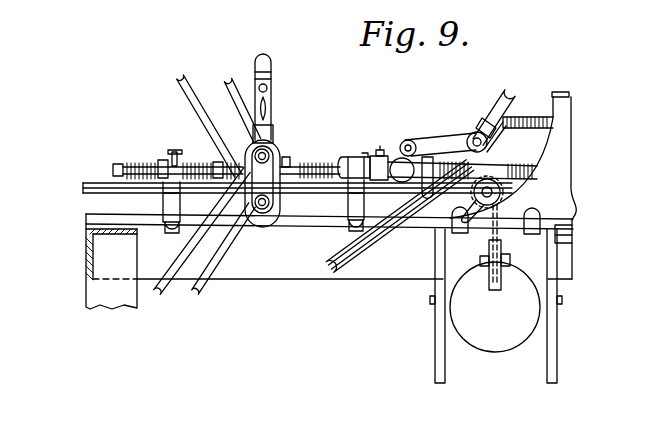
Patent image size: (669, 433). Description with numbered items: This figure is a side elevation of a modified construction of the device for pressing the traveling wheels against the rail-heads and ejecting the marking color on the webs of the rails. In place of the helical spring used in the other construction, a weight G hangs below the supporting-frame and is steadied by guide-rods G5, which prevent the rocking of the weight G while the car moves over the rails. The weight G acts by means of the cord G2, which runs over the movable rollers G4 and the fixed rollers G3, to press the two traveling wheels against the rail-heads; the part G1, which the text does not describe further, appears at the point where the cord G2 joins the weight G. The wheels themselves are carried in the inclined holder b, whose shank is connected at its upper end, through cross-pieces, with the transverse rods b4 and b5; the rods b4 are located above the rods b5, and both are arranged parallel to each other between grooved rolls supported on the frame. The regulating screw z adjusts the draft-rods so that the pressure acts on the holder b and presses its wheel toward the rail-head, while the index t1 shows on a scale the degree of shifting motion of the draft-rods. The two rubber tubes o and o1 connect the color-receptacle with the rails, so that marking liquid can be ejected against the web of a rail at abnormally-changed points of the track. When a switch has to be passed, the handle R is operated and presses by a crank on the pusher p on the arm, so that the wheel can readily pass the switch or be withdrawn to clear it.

The handle R is at (268, 70).
The rubber tube o is at (241, 101).
The rubber tube o1 is at (195, 107).
The pusher p is at (295, 196).
The index t1 is at (352, 155).
The screw z is at (375, 150).
The movable roller G4 is at (400, 142).
The transverse rod b4 is at (528, 116).
The transverse rod b5 is at (503, 171).
The fixed roller G3 is at (468, 192).
The shaft block G1 is at (490, 243).
The cord G2 is at (502, 240).
The weight G is at (495, 307).
The guide-rod G5 is at (440, 357).
The inclined holder b is at (373, 245).